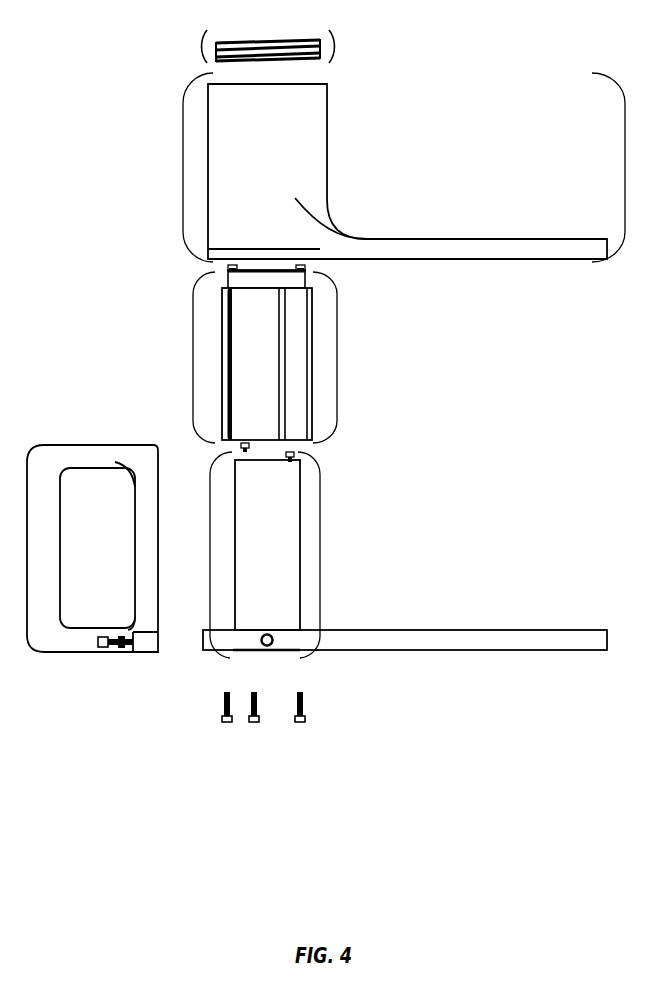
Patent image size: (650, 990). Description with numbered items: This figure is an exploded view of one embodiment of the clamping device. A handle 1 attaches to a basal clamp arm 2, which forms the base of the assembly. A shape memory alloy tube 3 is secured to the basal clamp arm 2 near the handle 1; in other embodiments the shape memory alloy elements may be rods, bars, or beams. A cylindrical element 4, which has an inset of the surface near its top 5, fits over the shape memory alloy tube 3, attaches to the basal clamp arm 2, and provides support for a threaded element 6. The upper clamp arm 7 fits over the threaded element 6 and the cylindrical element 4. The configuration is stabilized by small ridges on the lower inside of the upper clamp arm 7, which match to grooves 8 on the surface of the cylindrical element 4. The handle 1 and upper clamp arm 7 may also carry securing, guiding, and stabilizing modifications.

The handle 1 is at (65, 445).
The basal clamp arm 2 is at (423, 640).
The shape memory alloy tube 3 is at (318, 533).
The cylindrical element 4 is at (337, 357).
The inset of the surface near its top 5 is at (307, 272).
The threaded element 6 is at (343, 44).
The upper clamp arm 7 is at (180, 118).
The grooves 8 is at (280, 377).